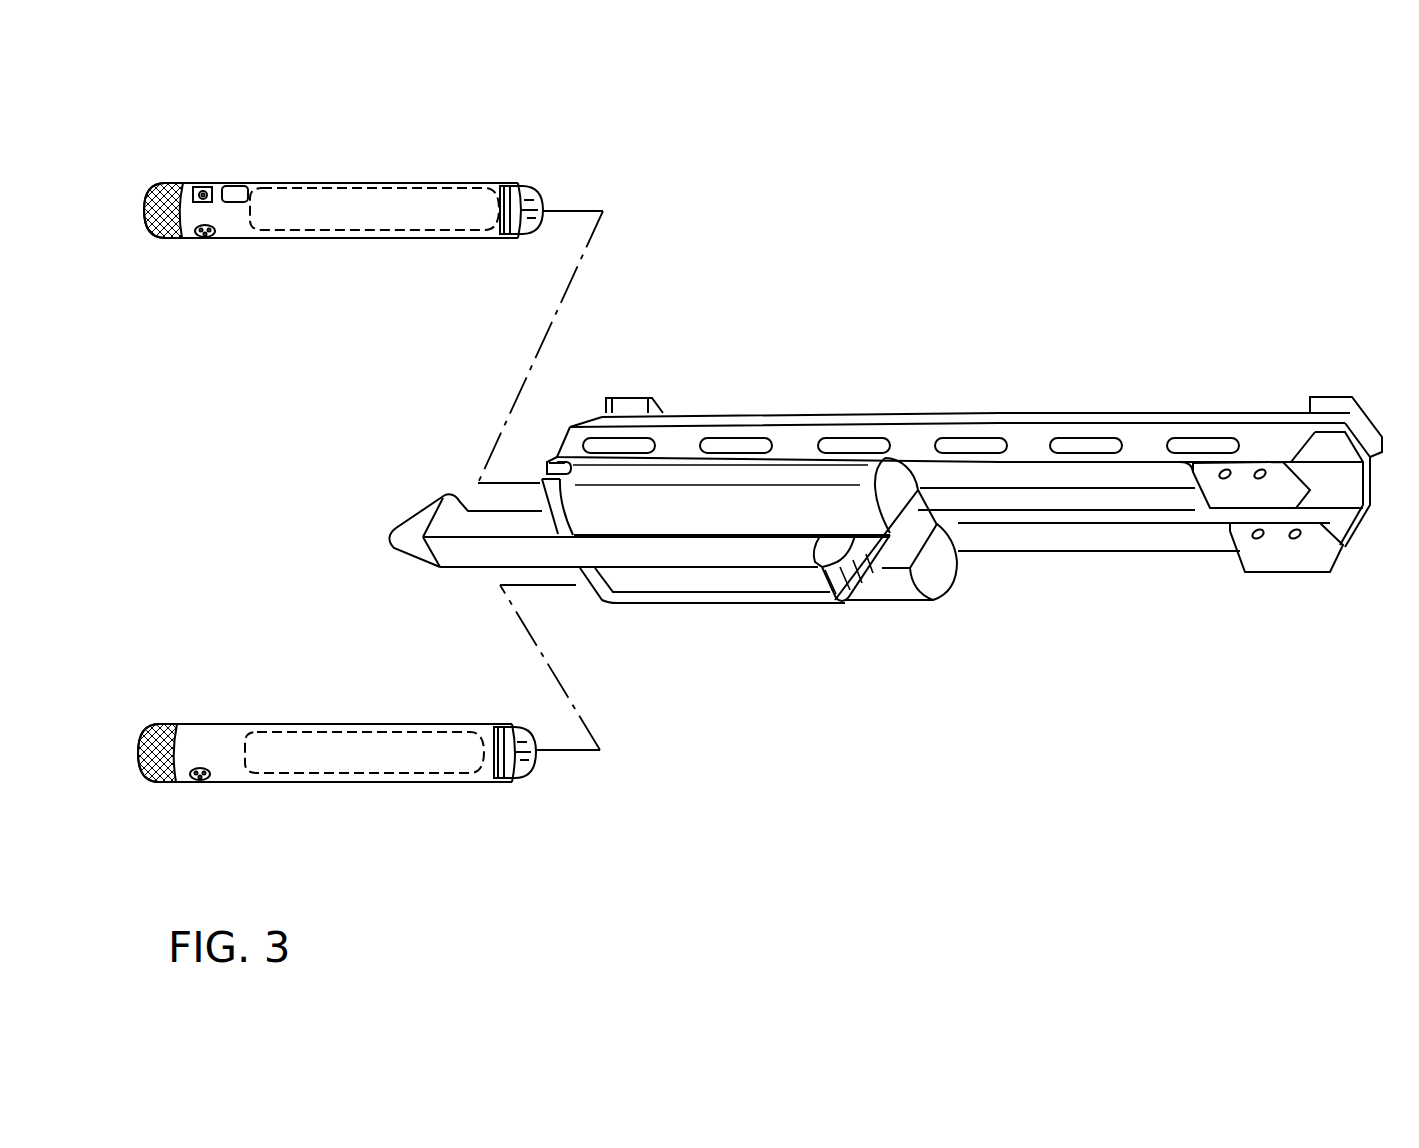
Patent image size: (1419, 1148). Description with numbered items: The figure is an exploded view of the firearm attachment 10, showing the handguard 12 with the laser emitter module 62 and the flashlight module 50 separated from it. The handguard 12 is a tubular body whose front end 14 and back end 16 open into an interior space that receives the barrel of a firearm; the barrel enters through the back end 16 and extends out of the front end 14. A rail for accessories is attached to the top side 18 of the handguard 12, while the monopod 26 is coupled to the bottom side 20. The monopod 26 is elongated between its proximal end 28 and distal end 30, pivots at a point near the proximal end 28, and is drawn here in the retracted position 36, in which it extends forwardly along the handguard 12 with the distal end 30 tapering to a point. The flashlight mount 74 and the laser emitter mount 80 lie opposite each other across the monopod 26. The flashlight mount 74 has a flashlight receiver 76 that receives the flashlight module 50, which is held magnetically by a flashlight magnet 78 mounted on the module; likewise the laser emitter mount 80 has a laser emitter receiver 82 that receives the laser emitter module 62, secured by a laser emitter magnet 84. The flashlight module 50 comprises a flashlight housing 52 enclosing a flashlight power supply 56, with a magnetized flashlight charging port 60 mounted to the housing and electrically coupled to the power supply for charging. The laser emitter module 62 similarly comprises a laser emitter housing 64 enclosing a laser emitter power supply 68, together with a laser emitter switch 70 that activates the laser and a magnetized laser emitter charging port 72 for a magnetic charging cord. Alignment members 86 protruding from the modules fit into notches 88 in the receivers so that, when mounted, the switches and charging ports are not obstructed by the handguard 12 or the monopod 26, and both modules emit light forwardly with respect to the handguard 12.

The firearm attachment 10 is at (1080, 150).
The handguard 12 is at (923, 524).
The front end 14 is at (555, 440).
The back end 16 is at (1370, 505).
The top side 18 is at (1045, 428).
The bottom side 20 is at (1112, 540).
The monopod 26 is at (657, 550).
The proximal end 28 is at (867, 557).
The distal end 30 is at (412, 547).
The retracted position 36 is at (584, 553).
The flashlight module 50 is at (365, 755).
The flashlight housing 52 is at (385, 780).
The flashlight power supply 56 is at (375, 748).
The flashlight charging port 60 is at (195, 780).
The laser emitter module 62 is at (375, 188).
The laser emitter housing 64 is at (463, 184).
The laser emitter power supply 68 is at (383, 207).
The laser emitter switch 70 is at (200, 186).
The laser emitter charging port 72 is at (204, 240).
The flashlight mount 74 is at (800, 622).
The flashlight receiver 76 is at (937, 570).
The flashlight magnet 78 is at (523, 760).
The laser emitter mount 80 is at (745, 455).
The laser emitter receiver 82 is at (670, 482).
The laser emitter magnet 84 is at (540, 203).
The alignment members 86 is at (240, 186).
The notches 88 is at (523, 465).